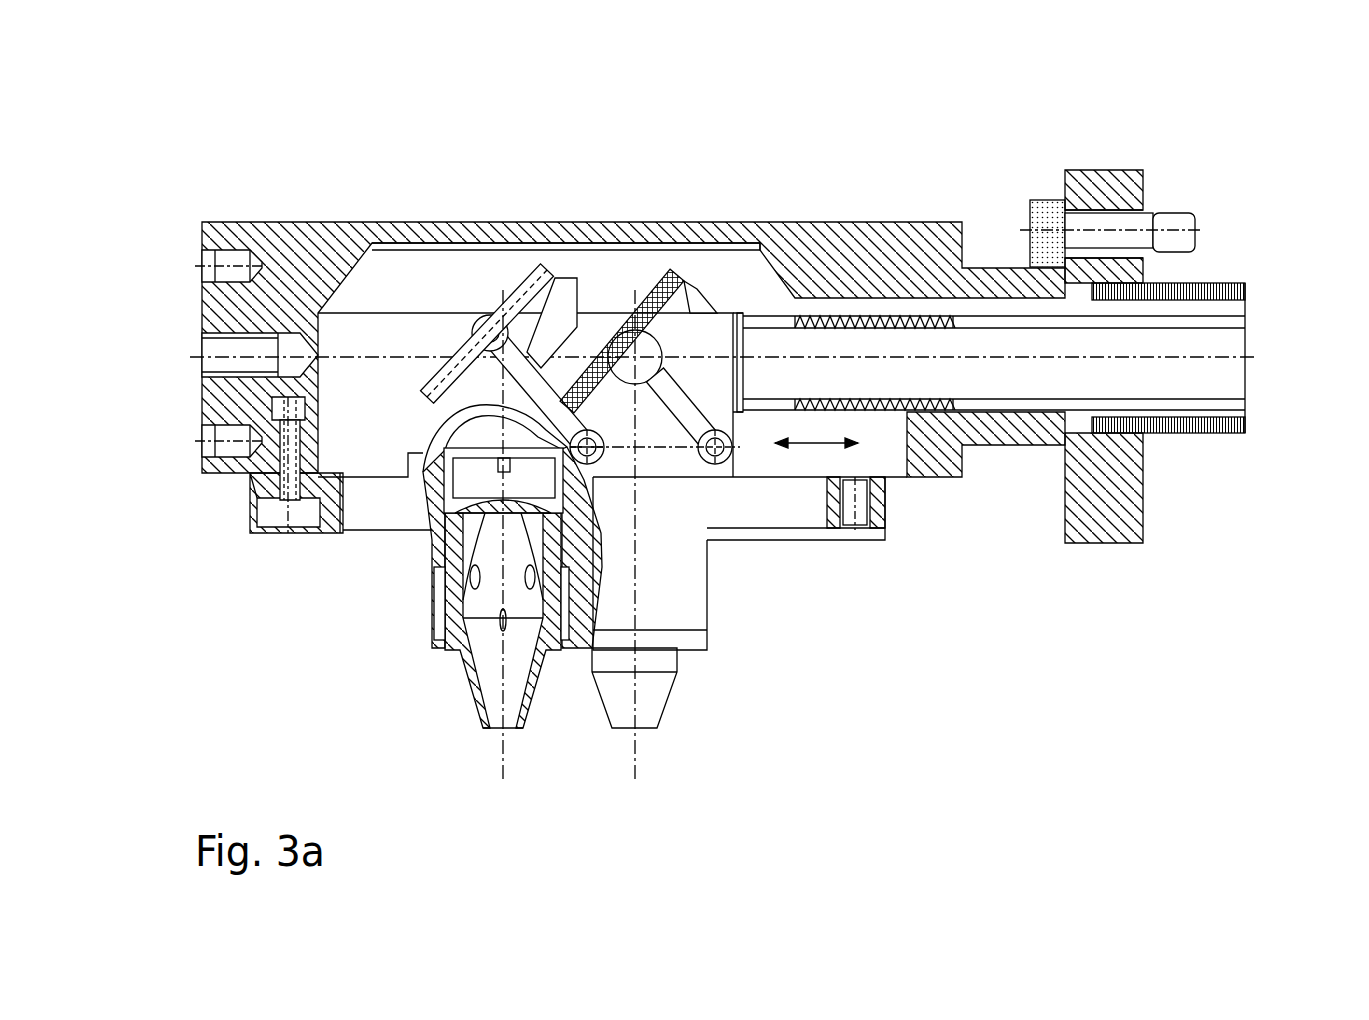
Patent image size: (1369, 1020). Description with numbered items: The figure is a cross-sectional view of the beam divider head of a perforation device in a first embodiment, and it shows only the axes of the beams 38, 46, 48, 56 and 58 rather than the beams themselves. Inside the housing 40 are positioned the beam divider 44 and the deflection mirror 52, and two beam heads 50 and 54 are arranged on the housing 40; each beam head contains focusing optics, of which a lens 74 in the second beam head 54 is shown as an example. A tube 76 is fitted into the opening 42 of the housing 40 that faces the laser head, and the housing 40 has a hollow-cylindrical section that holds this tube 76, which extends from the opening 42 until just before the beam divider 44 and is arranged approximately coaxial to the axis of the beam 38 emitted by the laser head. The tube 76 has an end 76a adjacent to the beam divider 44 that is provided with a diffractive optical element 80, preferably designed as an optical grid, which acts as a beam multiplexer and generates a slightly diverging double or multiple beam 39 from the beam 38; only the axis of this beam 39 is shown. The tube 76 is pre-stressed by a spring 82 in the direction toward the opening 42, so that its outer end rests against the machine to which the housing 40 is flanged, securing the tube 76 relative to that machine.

The beam 38 is at (1258, 364).
The double or multiple beam 39 is at (697, 357).
The housing 40 is at (320, 228).
The opening 42 is at (1220, 246).
The beam divider 44 is at (657, 293).
The beam 46 is at (633, 553).
The beam 48 is at (462, 380).
The beam head 50 is at (677, 603).
The deflection mirror 52 is at (508, 290).
The second beam head 54 is at (482, 648).
The beam 56 is at (633, 755).
The beam 58 is at (503, 755).
The lens 74 is at (432, 582).
The tube 76 is at (1222, 408).
The end of tube 76a is at (770, 297).
The diffractive optical element 80 is at (740, 318).
The spring 82 is at (882, 413).